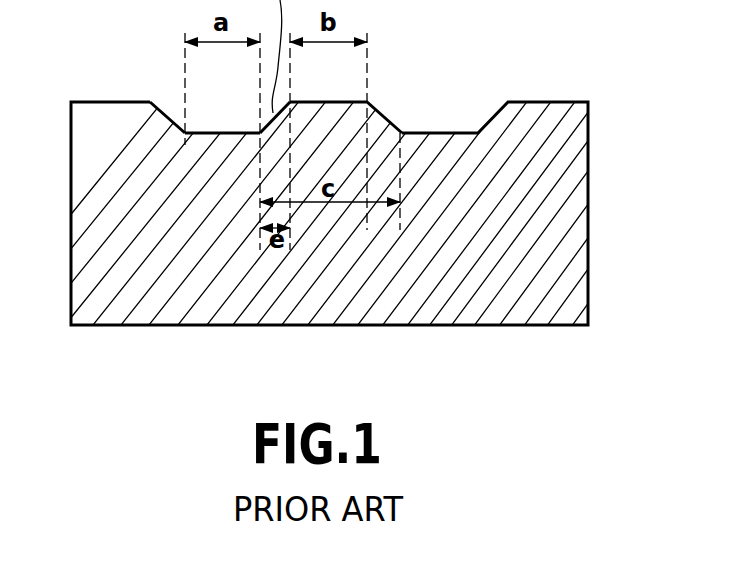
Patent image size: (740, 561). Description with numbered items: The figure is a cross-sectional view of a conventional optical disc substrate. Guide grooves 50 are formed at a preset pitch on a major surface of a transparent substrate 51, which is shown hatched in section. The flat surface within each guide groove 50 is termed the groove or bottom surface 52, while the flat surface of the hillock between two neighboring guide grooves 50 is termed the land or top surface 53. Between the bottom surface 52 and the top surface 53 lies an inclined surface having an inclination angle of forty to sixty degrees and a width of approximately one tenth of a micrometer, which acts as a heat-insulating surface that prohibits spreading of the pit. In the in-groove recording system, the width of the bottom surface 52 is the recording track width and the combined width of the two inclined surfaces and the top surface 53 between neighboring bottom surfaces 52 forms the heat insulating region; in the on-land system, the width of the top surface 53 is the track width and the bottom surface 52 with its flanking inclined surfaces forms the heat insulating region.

The guide groove 50 is at (197, 133).
The transparent substrate 51 is at (570, 246).
The bottom surface 52 is at (233, 132).
The top surface 53 is at (337, 100).